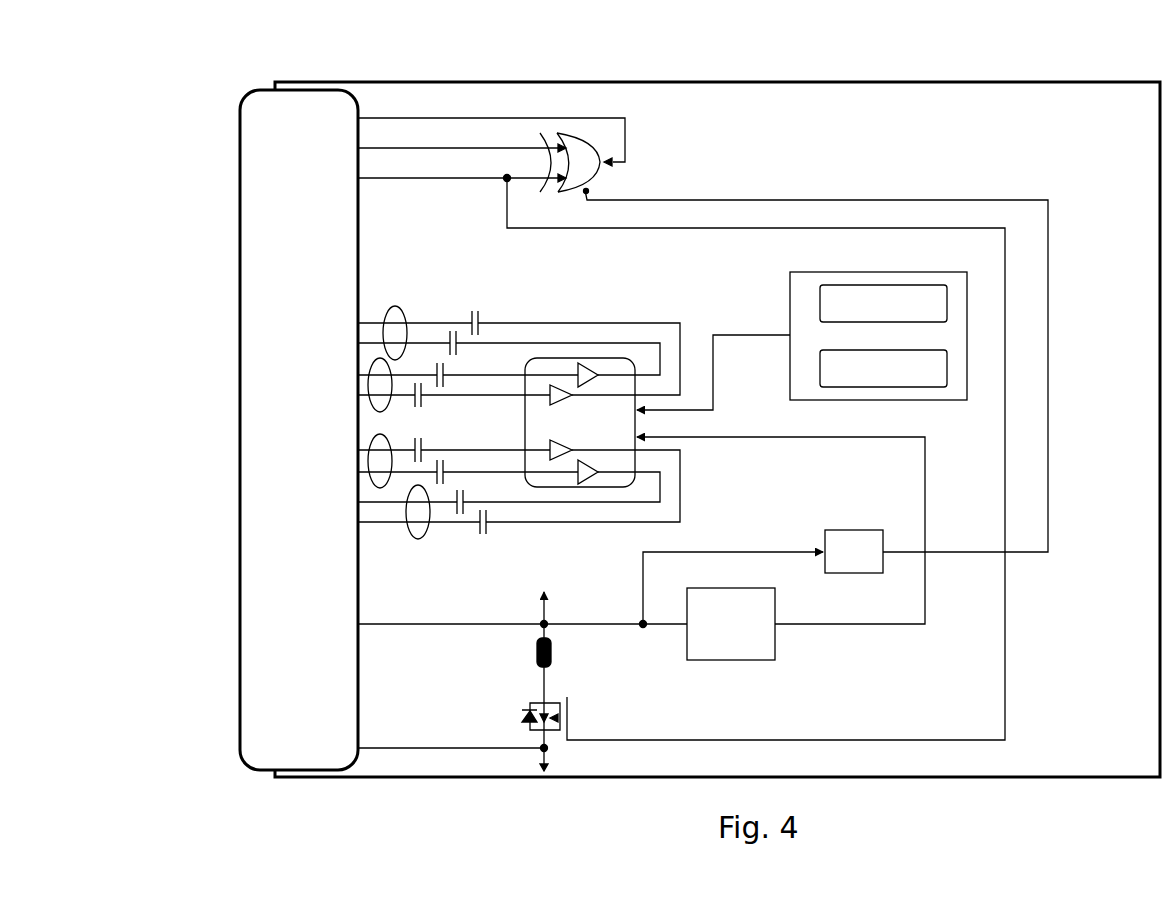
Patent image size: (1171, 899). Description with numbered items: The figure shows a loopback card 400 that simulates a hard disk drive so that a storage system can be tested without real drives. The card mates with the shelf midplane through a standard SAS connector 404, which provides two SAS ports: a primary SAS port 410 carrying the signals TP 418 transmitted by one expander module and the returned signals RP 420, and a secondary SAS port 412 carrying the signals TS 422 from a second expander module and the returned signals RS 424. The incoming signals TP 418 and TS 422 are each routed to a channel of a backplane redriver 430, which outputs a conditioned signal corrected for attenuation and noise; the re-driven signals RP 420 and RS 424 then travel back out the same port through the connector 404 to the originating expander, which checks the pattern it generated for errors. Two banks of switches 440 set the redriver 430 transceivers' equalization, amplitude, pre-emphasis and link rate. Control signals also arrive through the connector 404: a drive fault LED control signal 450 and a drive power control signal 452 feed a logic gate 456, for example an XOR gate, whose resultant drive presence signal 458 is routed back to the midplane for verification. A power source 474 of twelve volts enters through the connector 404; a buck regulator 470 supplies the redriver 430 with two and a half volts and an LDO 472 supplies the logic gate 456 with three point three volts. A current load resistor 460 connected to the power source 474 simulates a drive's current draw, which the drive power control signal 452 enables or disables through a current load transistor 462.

The loopback card 400 is at (632, 62).
The SAS connector 404 is at (243, 92).
The SAS port 410 is at (238, 317).
The SAS port 412 is at (238, 445).
The TP signals 418 is at (375, 357).
The RP signals 420 is at (393, 305).
The TS signals 422 is at (362, 444).
The RS signals 424 is at (400, 540).
The backplane redriver 430 is at (540, 356).
The banks of switches 440 is at (950, 258).
The drive fault LED control signal 450 is at (413, 146).
The drive power control signal 452 is at (436, 176).
The logic gate 456 is at (612, 156).
The drive presence signal 458 is at (466, 116).
The current load resistor 460 is at (518, 678).
The current load transistor 462 is at (571, 751).
The buck regulator 470 is at (734, 543).
The LDO 472 is at (808, 577).
The power source 474 is at (293, 634).